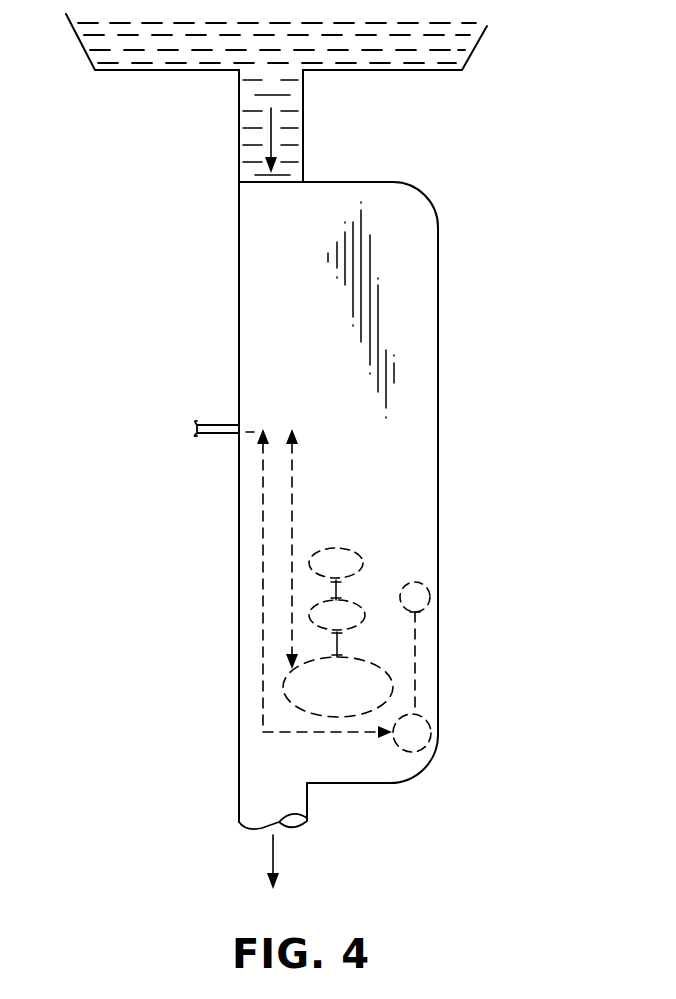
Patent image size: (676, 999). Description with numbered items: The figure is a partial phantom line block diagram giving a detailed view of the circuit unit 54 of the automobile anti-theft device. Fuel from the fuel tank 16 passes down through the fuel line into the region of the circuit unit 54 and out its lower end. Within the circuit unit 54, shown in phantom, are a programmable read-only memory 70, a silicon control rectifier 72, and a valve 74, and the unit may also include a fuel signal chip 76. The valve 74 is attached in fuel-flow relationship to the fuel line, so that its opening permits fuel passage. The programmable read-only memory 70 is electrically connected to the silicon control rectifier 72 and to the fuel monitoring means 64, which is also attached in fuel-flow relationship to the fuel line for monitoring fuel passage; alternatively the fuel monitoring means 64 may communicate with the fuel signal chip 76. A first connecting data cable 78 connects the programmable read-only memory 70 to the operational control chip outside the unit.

The fuel tank 16 is at (468, 38).
The circuit unit 54 is at (523, 271).
The first connecting data cable 78 is at (221, 424).
The valve 74 is at (336, 546).
The silicon control rectifier 72 is at (360, 603).
The programmable read-only memory 70 is at (357, 655).
The fuel monitoring means 64 is at (422, 586).
The fuel signal chip 76 is at (423, 724).